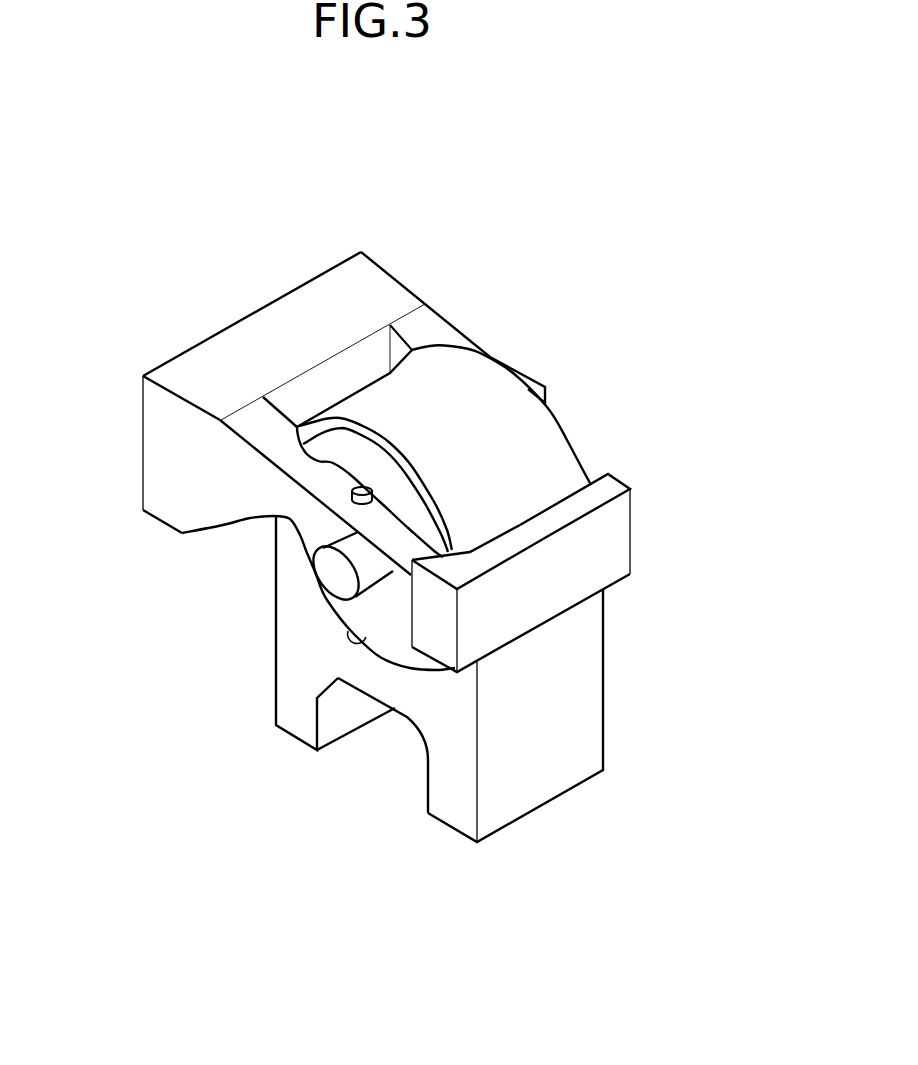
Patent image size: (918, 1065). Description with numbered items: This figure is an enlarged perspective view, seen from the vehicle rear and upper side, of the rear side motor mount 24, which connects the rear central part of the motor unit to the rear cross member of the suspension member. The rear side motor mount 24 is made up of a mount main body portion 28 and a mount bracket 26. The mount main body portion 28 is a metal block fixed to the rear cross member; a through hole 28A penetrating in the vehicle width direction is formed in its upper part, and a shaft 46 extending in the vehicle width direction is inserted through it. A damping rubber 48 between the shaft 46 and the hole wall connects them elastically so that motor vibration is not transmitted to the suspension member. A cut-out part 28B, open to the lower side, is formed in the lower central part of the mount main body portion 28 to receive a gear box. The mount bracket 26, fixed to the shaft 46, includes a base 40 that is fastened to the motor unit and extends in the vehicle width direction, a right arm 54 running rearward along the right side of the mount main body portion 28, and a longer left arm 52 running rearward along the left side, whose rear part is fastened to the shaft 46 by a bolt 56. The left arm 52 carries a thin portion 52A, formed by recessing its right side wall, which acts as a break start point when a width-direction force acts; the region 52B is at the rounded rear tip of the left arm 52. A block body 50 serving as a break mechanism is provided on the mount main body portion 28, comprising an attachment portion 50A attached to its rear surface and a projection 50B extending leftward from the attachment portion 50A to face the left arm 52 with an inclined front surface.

The rear side motor mount 24 is at (473, 212).
The mount bracket 26 is at (323, 270).
The mount main body portion 28 is at (573, 433).
The through hole 28A is at (348, 633).
The cut-out part 28B is at (426, 783).
The base 40 is at (250, 312).
The shaft 46 is at (325, 577).
The damping rubber 48 is at (404, 652).
The block body 50 is at (637, 532).
The attachment portion 50A is at (620, 480).
The projection 50B is at (473, 538).
The left arm 52 is at (250, 458).
The thin portion 52A is at (337, 463).
The hook end of arm 52B is at (423, 527).
The right arm 54 is at (460, 327).
The bolt 56 is at (350, 488).